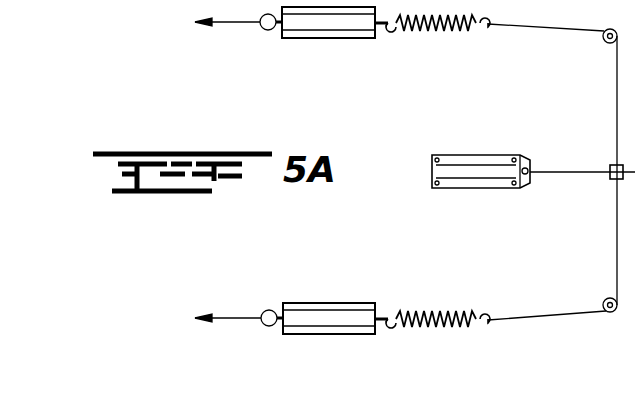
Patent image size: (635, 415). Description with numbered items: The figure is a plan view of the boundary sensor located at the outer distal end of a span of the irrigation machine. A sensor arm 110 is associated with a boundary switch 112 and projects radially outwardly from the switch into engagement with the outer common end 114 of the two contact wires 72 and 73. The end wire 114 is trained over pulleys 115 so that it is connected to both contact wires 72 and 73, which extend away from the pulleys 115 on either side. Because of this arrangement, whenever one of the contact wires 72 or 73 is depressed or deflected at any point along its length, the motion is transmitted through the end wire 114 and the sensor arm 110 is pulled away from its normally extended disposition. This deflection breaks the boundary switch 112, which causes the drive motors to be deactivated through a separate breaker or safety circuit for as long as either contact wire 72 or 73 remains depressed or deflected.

The contact wire 72 is at (242, 24).
The contact wire 73 is at (243, 316).
The sensor arm 110 is at (577, 170).
The boundary switch 112 is at (462, 155).
The outer common end 114 is at (613, 181).
The pulleys 115 is at (602, 40).